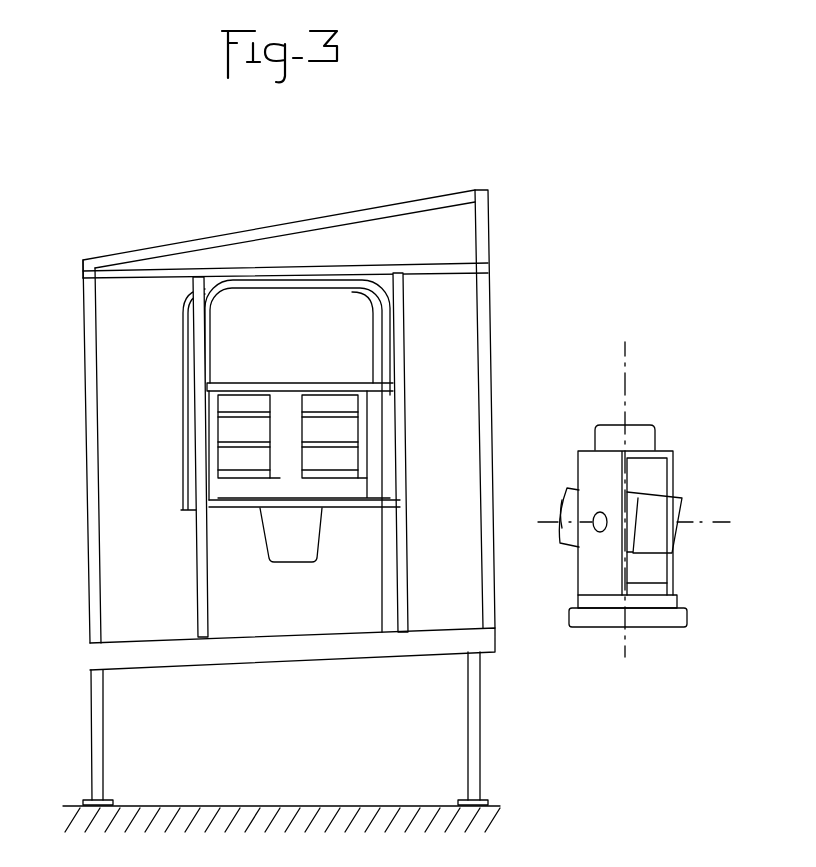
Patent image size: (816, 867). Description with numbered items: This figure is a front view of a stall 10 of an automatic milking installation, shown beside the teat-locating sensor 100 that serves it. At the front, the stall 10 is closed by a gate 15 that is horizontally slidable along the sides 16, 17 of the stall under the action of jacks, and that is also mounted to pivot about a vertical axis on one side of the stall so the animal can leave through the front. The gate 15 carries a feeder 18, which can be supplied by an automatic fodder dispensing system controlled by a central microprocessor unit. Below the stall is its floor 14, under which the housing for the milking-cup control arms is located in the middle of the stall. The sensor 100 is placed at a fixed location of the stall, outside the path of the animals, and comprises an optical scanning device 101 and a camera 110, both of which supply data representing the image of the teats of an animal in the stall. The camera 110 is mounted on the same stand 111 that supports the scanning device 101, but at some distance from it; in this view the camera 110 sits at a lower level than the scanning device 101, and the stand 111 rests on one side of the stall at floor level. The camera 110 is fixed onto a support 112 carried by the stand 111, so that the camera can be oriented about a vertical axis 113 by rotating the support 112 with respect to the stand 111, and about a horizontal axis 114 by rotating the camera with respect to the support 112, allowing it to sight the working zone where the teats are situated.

The stall 10 is at (76, 420).
The floor 14 is at (343, 632).
The gate 15 is at (317, 387).
The side 16 is at (202, 432).
The side 17 is at (400, 438).
The feeder 18 is at (293, 548).
The sensor 100 is at (627, 496).
The optical scanning device 101 is at (646, 437).
The camera 110 is at (570, 533).
The stand 111 is at (578, 613).
The support 112 is at (590, 473).
The vertical axis 113 is at (626, 377).
The horizontal axis 114 is at (715, 525).